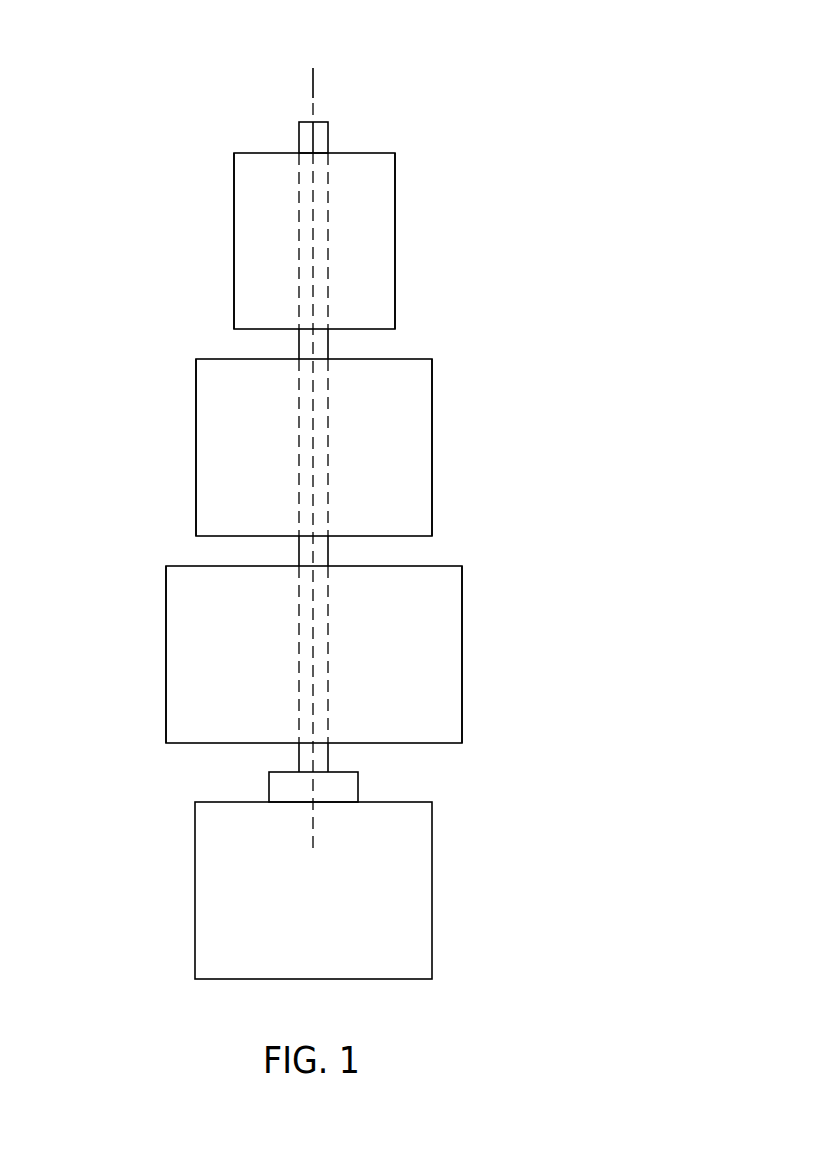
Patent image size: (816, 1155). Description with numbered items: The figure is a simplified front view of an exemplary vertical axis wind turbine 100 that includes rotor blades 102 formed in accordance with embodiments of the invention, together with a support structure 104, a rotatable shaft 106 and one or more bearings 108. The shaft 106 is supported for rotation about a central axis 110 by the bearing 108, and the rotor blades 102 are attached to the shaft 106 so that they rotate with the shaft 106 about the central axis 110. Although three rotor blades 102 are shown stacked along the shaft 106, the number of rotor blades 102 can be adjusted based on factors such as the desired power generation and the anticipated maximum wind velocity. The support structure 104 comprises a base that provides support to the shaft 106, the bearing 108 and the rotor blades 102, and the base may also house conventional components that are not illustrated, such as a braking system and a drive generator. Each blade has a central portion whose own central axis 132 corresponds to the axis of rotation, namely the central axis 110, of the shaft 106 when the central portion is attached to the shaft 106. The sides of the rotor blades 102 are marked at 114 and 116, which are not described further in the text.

The vertical axis wind turbine 100 is at (541, 83).
The rotor blade 102 is at (390, 310).
The support structure 104 is at (427, 858).
The rotatable shaft 106 is at (328, 130).
The bearing 108 is at (355, 785).
The central axis 110 is at (313, 98).
The module right side 114 is at (390, 218).
The module left side 116 is at (239, 210).
The central axis 132 is at (313, 70).